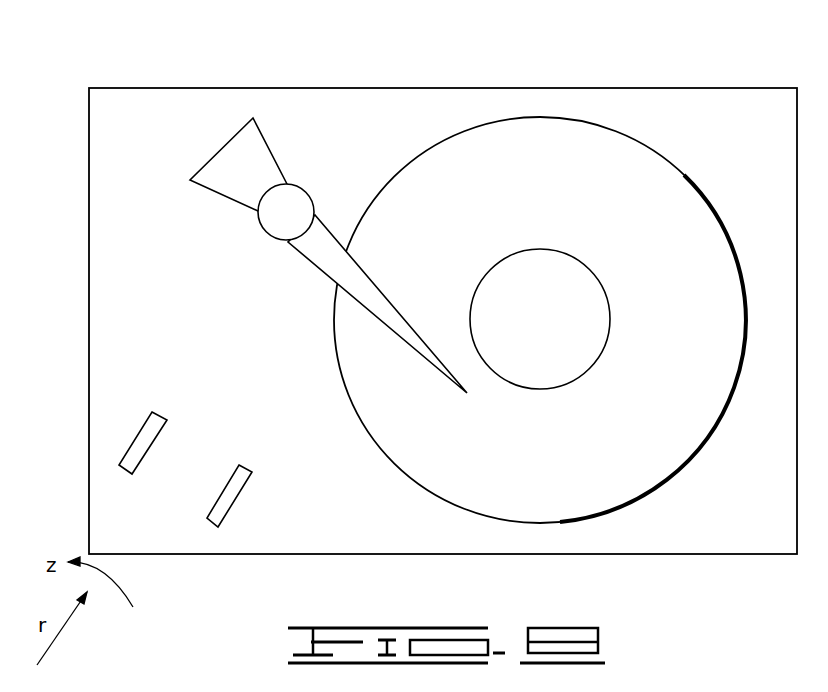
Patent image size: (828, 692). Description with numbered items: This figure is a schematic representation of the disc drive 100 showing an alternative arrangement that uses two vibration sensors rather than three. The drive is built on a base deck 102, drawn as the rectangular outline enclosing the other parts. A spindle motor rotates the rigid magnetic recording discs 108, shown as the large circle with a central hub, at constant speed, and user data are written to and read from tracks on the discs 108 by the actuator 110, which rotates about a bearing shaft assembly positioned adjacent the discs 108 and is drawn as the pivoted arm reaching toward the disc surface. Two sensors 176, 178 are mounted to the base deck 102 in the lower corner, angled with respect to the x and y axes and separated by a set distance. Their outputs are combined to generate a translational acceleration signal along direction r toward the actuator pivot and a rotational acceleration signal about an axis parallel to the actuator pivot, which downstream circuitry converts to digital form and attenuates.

The disc drive 100 is at (213, 42).
The base deck 102 is at (150, 103).
The magnetic recording discs 108 is at (593, 143).
The actuator 110 is at (293, 183).
The sensor 176 is at (124, 472).
The sensor 178 is at (220, 527).